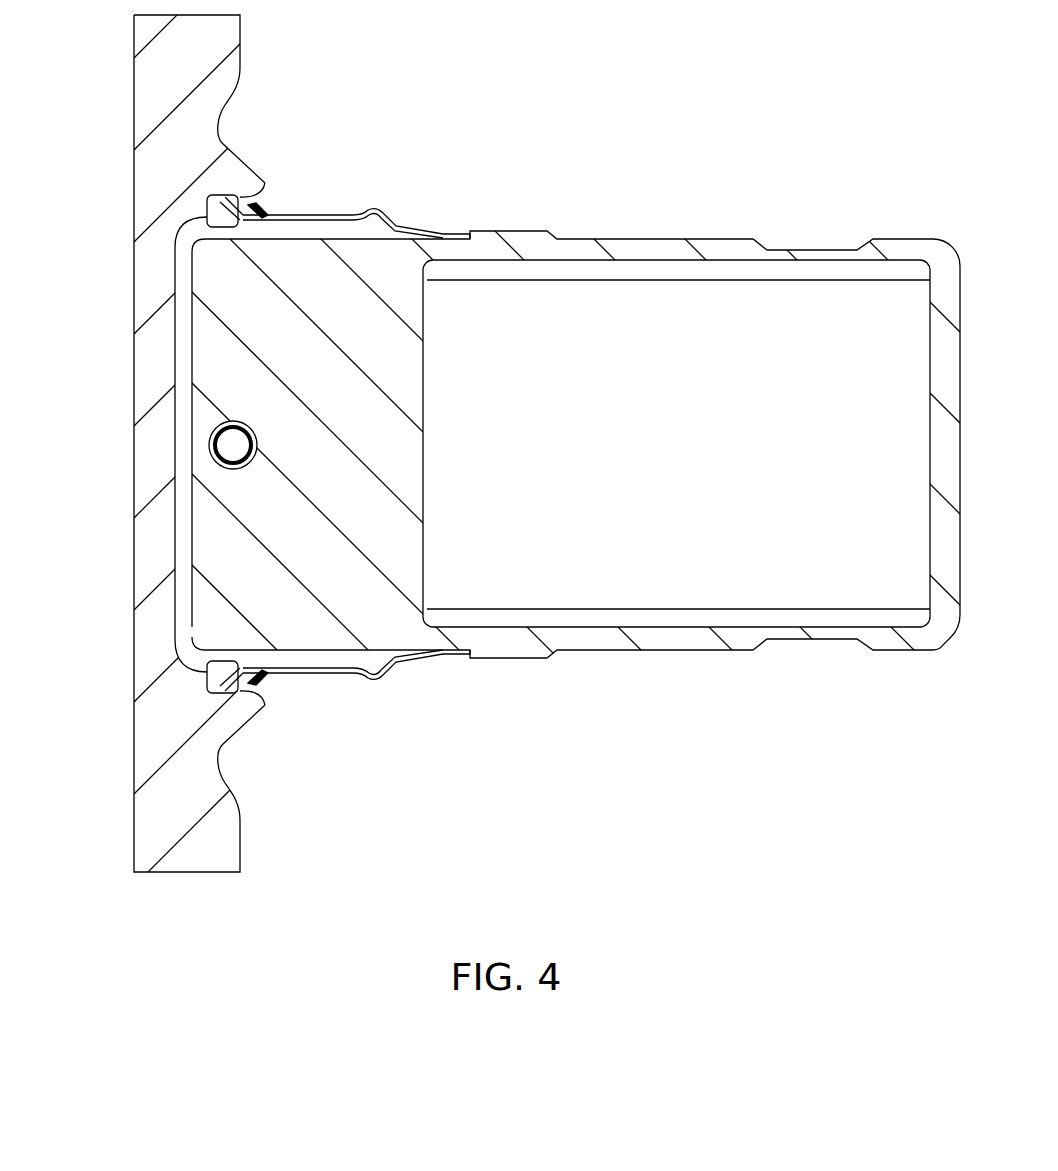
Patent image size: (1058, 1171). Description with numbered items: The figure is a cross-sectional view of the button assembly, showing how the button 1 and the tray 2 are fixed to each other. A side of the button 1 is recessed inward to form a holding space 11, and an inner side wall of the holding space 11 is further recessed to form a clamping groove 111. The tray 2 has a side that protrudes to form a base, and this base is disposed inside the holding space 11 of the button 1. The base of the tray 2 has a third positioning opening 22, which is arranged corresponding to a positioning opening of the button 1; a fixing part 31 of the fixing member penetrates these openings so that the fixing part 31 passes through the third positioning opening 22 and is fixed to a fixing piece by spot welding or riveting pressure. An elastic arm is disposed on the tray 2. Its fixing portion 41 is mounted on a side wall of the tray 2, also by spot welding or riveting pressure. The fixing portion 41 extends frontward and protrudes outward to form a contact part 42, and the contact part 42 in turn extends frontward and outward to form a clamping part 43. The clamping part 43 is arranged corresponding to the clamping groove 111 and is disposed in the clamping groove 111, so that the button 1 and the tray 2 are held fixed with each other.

The button 1 is at (160, 173).
The holding space 11 is at (175, 345).
The clamping groove 111 is at (265, 210).
The tray 2 is at (652, 250).
The third positioning opening 22 is at (208, 443).
The fixing part 31 is at (232, 447).
The fixing portion 41 is at (420, 233).
The contact part 42 is at (373, 211).
The clamping part 43 is at (240, 212).